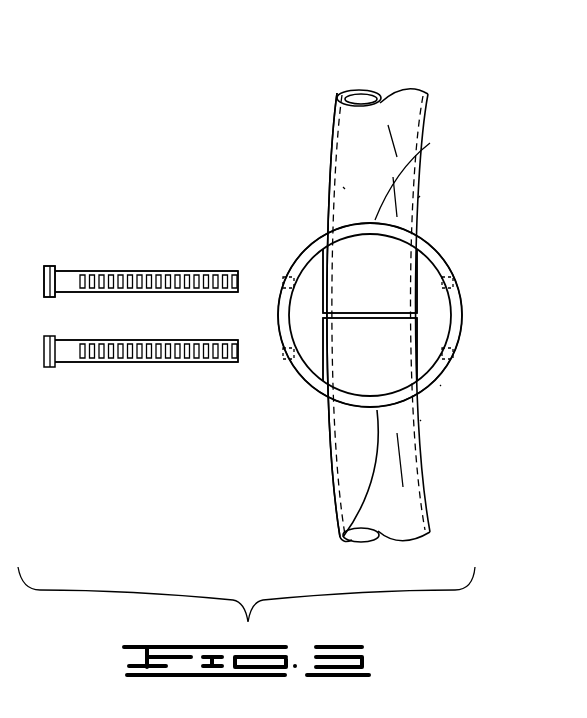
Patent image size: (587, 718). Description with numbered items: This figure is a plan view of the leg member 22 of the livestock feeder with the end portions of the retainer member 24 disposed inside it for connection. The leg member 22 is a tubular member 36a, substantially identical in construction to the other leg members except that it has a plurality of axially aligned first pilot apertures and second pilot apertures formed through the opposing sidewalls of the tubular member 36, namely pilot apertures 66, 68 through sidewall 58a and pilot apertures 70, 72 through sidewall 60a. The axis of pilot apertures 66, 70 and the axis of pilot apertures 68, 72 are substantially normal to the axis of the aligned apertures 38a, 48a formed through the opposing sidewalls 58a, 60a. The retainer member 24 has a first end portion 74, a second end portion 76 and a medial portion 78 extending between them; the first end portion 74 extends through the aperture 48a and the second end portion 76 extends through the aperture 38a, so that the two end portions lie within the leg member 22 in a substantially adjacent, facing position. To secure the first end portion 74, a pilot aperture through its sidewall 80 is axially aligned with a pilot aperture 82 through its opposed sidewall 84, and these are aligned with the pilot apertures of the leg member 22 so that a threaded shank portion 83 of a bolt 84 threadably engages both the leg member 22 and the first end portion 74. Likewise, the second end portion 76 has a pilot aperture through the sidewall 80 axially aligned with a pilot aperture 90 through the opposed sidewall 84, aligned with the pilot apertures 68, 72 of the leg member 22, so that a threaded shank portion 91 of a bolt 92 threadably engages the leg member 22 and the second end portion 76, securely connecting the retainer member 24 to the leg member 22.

The leg member 22 is at (440, 243).
The retainer member 24 is at (327, 105).
The tubular member 36 is at (333, 278).
The tubular member 36a is at (440, 385).
The aperture 38a is at (420, 198).
The aperture 48a is at (420, 420).
The sidewall 58a is at (430, 143).
The sidewall 60a is at (457, 312).
The pilot aperture 66 is at (284, 357).
The pilot aperture 68 is at (284, 278).
The pilot aperture 70 is at (454, 352).
The pilot aperture 72 is at (453, 282).
The first end portion 74 is at (353, 457).
The second end portion 76 is at (343, 187).
The medial portion 78 is at (333, 352).
The sidewall 80 is at (330, 135).
The pilot aperture 82 is at (412, 350).
The threaded shank portion 83 is at (148, 364).
The bolt 84 is at (430, 108).
The pilot aperture 90 is at (412, 279).
The threaded shank portion 91 is at (165, 272).
The bolt 92 is at (113, 268).